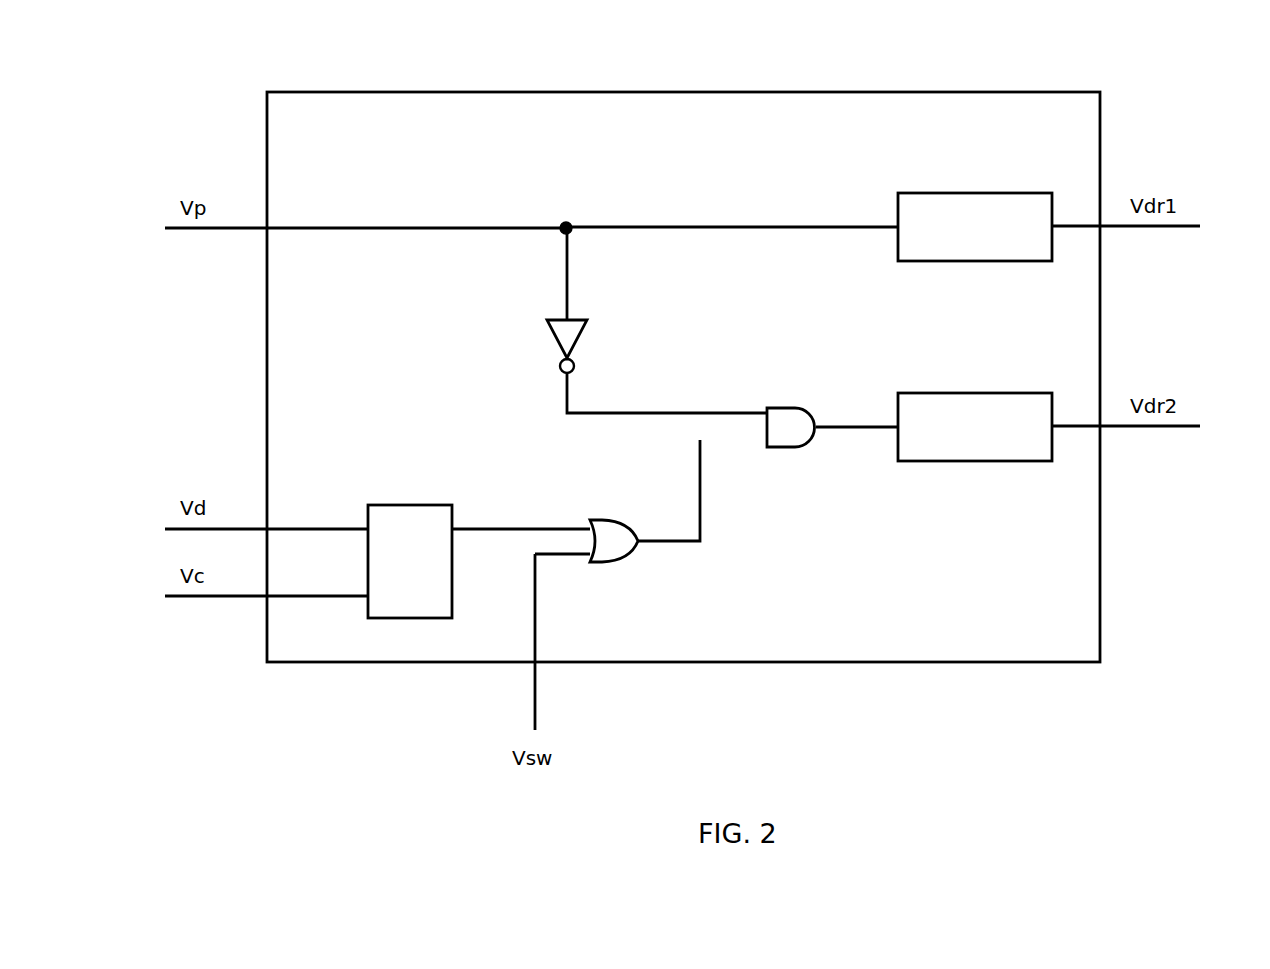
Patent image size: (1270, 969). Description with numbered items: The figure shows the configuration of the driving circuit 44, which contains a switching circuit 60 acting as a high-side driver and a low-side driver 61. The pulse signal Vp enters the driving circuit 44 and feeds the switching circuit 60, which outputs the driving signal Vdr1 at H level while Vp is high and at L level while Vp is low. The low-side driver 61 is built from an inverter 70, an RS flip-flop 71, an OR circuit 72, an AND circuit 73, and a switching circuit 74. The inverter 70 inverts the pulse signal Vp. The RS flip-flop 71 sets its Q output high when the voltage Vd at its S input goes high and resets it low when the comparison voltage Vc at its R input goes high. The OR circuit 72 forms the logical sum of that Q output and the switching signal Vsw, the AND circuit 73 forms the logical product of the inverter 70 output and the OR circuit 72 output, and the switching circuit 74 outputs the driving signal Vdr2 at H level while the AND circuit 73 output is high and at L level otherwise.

The driving circuit 44 is at (369, 92).
The switching circuit 60 is at (905, 193).
The low-side driver 61 is at (436, 349).
The inverter 70 is at (587, 320).
The RS flip-flop 71 is at (373, 505).
The OR circuit 72 is at (600, 520).
The AND circuit 73 is at (800, 408).
The switching circuit 74 is at (905, 393).